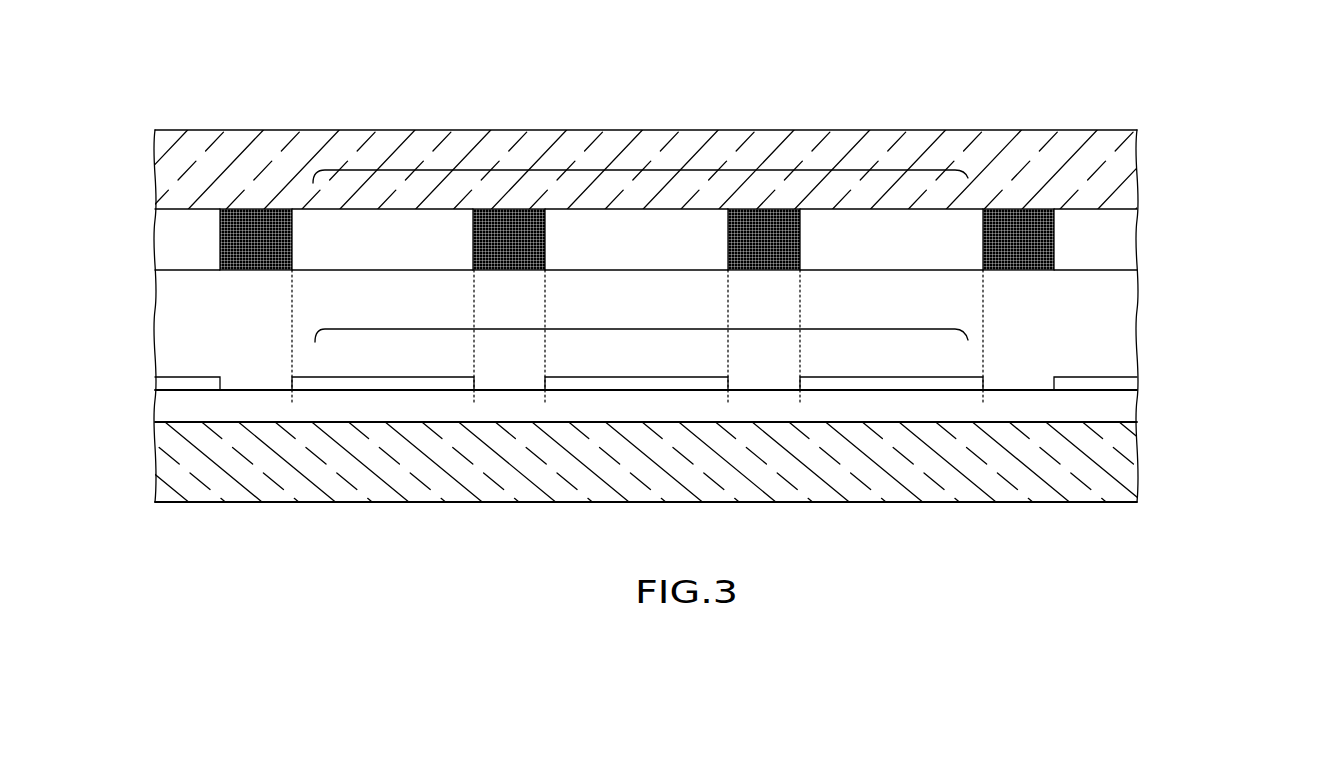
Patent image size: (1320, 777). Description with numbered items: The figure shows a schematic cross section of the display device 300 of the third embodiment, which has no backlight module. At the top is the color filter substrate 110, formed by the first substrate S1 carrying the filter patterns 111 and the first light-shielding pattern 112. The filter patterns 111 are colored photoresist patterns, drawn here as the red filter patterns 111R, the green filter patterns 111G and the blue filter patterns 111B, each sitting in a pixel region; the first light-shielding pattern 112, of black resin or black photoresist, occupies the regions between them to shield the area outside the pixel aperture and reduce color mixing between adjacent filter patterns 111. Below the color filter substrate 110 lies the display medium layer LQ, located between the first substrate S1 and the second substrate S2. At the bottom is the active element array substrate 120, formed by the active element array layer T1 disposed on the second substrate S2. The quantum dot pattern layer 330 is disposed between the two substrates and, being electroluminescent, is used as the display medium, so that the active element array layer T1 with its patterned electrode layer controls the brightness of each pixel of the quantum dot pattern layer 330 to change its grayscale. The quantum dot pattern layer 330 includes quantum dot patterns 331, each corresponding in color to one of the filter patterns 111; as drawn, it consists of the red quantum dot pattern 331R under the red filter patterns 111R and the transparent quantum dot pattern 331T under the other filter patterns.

The display device 300 is at (113, 91).
The color filter substrate 110 is at (1230, 175).
The first substrate S1 is at (1130, 148).
The filter patterns 111 is at (656, 170).
The red filter patterns 111R is at (343, 238).
The green filter patterns 111G is at (647, 238).
The blue filter patterns 111B is at (944, 238).
The first light-shielding pattern 112 is at (1018, 222).
The display medium layer LQ is at (1130, 302).
The active element array substrate 120 is at (1230, 440).
The quantum dot pattern layer 330 is at (1152, 380).
The quantum dot pattern 331 is at (656, 329).
The transparent quantum dot pattern 331T is at (197, 383).
The red quantum dot pattern 331R is at (385, 382).
The active element array layer T1 is at (1130, 404).
The second substrate S2 is at (1130, 458).